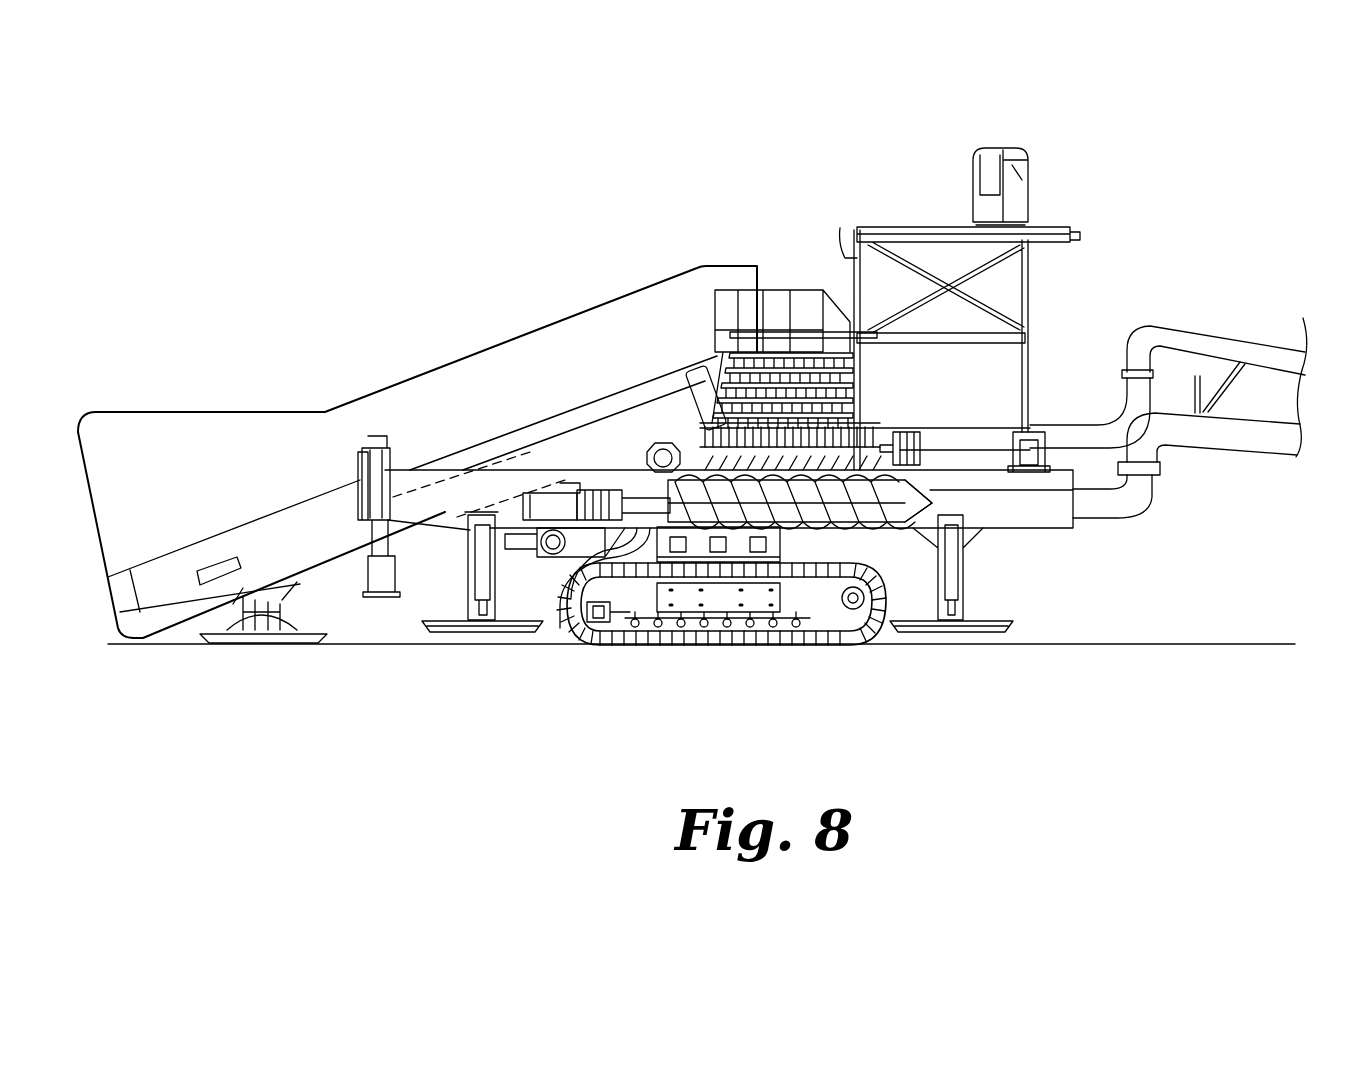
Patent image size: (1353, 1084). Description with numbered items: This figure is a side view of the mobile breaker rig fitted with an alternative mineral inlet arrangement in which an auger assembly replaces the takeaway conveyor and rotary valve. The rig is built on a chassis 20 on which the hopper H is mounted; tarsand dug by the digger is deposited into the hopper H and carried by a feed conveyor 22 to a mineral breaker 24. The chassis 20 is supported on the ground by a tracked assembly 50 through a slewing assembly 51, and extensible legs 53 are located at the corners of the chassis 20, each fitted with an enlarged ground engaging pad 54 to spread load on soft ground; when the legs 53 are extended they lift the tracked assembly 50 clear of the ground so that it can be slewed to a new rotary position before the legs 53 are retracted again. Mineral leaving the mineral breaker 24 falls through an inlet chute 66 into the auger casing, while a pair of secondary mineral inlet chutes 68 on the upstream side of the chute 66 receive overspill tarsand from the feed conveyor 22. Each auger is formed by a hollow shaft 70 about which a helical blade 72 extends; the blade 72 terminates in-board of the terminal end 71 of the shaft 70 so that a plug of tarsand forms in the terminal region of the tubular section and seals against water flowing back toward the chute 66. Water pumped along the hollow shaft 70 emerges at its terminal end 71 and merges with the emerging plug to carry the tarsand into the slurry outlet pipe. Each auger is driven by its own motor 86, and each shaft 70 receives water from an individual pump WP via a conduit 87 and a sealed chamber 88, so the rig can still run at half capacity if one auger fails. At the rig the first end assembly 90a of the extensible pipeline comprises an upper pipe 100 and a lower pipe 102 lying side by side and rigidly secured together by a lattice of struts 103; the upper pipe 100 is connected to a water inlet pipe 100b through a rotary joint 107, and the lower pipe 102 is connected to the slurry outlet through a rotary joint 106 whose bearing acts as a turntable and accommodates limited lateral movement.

The hopper H is at (202, 440).
The chassis 20 is at (440, 508).
The feed conveyor 22 is at (667, 387).
The mineral breaker 24 is at (820, 436).
The tracked assembly 50 is at (679, 663).
The slewing assembly 51 is at (806, 549).
The extensible legs 53 is at (476, 583).
The ground engaging pad 54 is at (521, 628).
The inlet chute 66 is at (877, 431).
The secondary mineral inlet chutes 68 is at (690, 438).
The hollow shaft 70 is at (872, 525).
The terminal end 71 is at (930, 488).
The helical blade 72 is at (708, 410).
The motor 86 is at (562, 489).
The conduit 87 is at (545, 628).
The sealed chamber 88 is at (624, 490).
The first end assembly 90a is at (1235, 306).
The upper pipe 100 is at (1275, 338).
The water inlet pipe 100b is at (1110, 413).
The lower pipe 102 is at (1272, 432).
The lattice of struts 103 is at (1232, 372).
The rotary joint 106 is at (1167, 474).
The rotary joint 107 is at (1127, 352).
The pump WP is at (550, 545).